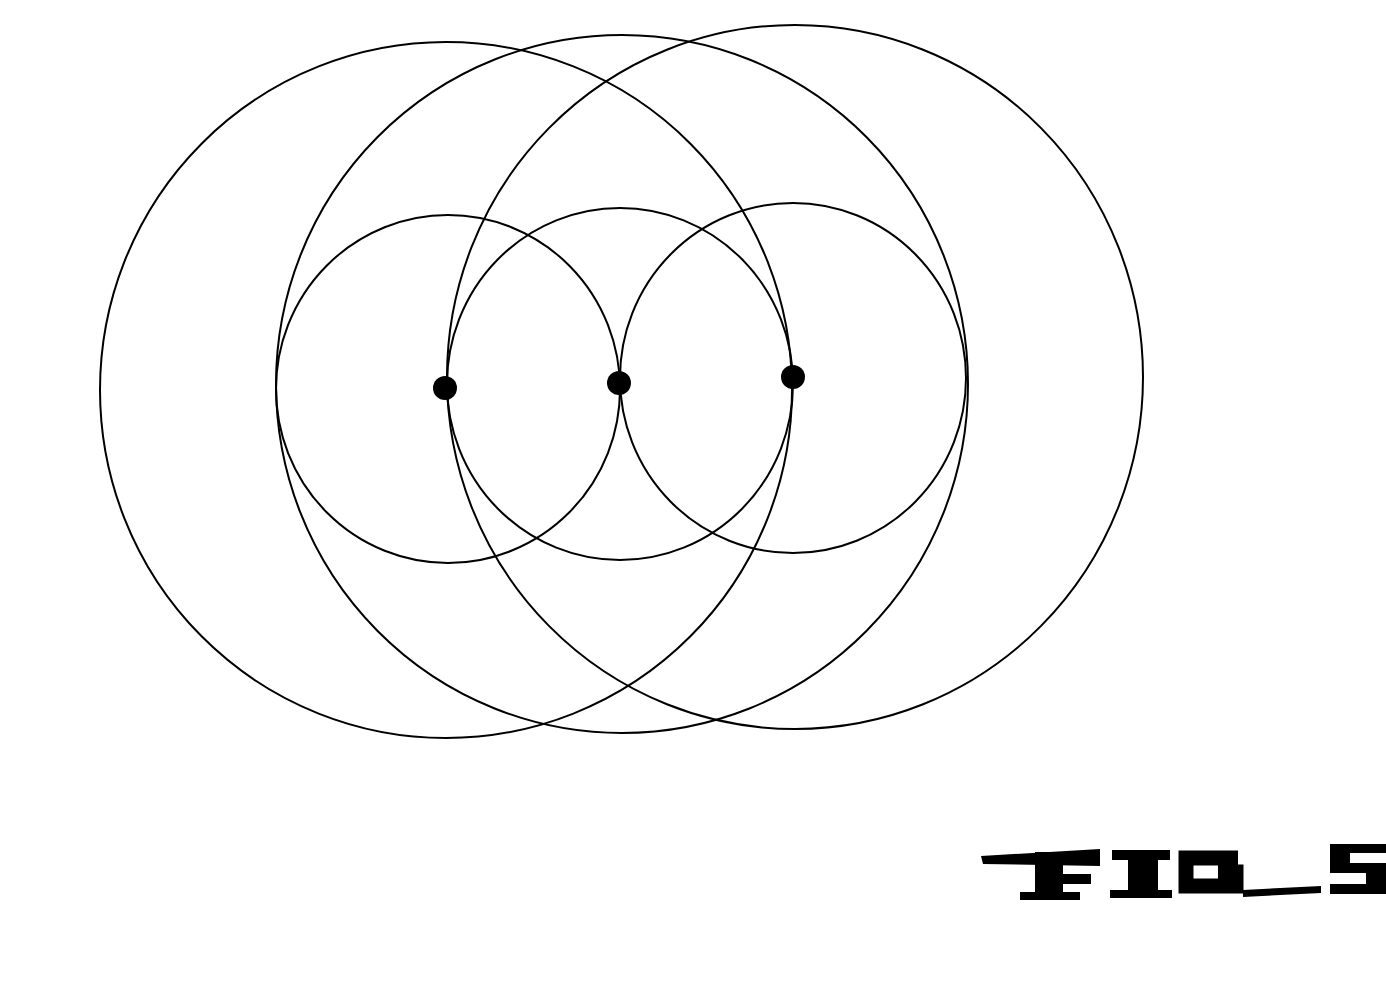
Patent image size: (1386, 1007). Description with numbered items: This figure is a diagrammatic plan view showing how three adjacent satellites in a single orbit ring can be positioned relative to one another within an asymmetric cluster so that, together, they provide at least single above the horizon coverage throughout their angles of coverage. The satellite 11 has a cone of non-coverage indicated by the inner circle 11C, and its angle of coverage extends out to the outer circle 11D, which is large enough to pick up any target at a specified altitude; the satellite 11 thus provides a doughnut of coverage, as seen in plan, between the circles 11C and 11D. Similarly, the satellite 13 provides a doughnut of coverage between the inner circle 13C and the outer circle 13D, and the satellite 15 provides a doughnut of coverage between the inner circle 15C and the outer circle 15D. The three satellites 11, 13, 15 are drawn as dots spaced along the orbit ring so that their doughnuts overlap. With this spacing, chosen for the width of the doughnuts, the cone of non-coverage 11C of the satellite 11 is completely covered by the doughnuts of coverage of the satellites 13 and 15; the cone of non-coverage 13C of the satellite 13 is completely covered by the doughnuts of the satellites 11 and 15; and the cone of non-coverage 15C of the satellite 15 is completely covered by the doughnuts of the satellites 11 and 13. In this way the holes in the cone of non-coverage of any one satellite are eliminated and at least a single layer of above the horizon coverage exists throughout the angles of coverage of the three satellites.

The satellite 11 is at (802, 367).
The satellite 13 is at (626, 374).
The satellite 15 is at (457, 379).
The circle indicating cone of non-coverage 11C is at (942, 465).
The inner circle 13C is at (786, 440).
The inner circle 15C is at (612, 428).
The outer circle 11D is at (1025, 115).
The outer circle 13D is at (847, 122).
The outer circle 15D is at (687, 142).